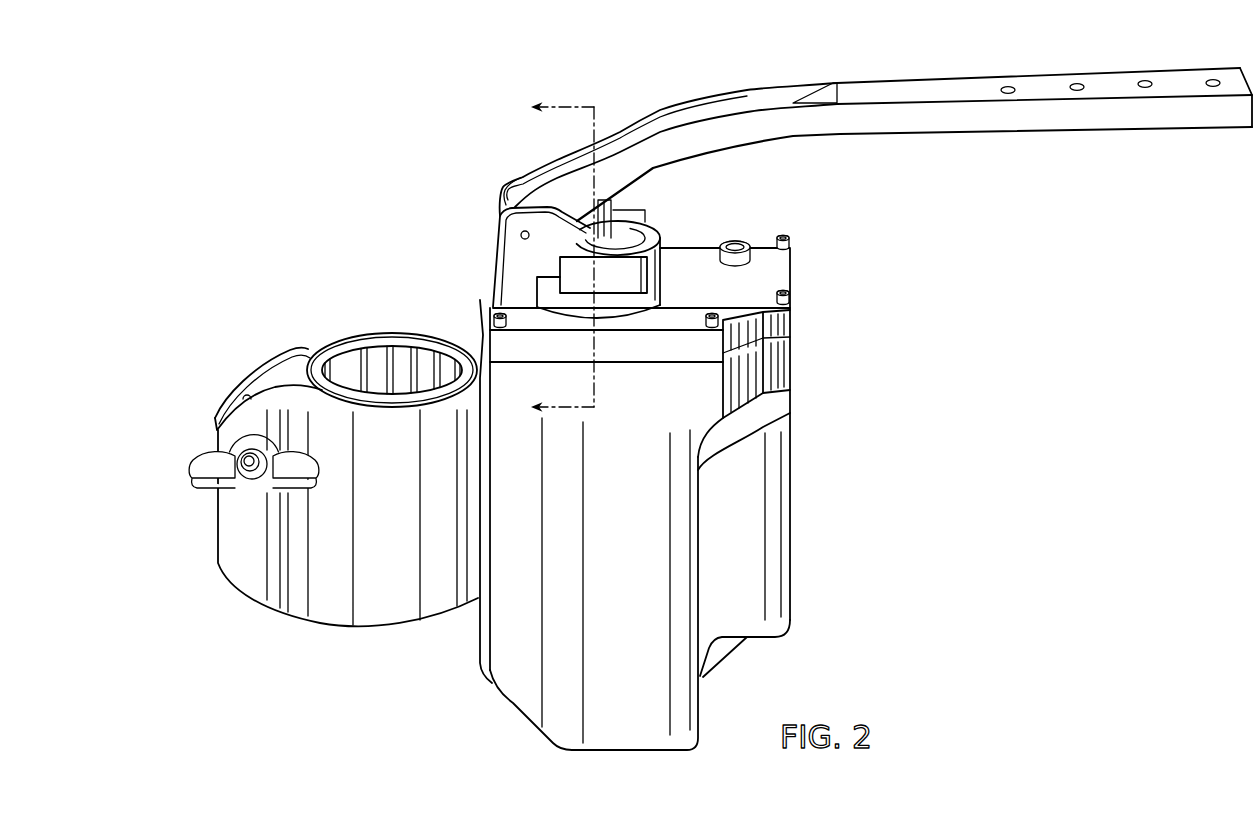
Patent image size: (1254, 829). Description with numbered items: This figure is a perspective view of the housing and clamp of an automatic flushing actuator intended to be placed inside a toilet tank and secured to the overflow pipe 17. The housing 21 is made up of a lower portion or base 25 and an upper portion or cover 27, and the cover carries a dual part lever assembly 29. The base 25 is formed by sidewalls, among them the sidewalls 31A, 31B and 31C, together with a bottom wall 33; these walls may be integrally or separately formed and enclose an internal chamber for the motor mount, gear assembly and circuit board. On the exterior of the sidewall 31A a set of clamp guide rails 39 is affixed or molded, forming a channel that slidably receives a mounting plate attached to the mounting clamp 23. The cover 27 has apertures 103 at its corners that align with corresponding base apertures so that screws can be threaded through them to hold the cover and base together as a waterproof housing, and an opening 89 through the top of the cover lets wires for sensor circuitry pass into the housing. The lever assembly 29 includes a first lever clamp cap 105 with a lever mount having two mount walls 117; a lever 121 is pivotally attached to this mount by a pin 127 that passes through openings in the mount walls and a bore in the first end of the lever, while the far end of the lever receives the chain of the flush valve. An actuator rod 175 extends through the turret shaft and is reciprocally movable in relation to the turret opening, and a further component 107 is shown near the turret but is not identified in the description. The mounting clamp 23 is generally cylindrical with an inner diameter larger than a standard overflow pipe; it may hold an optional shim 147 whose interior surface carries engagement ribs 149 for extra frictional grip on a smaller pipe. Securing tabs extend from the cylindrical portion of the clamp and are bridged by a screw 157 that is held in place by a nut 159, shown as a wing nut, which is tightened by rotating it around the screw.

The overflow pipe 17 is at (544, 256).
The housing 21 is at (852, 330).
The mounting clamp 23 is at (336, 610).
The base 25 is at (477, 690).
The cover 27 is at (804, 280).
The dual part lever assembly 29 is at (667, 216).
The sidewall 31A is at (477, 641).
The sidewall 31B is at (684, 712).
The sidewall 31C is at (754, 421).
The bottom wall 33 is at (557, 748).
The clamp guide rails 39 is at (479, 352).
The opening 89 is at (738, 243).
The apertures 103 is at (782, 241).
The first lever clamp cap 105 is at (505, 266).
The hub 107 is at (678, 248).
The mount walls 117 is at (510, 218).
The lever 121 is at (987, 137).
The pin 127 is at (519, 235).
The shim 147 is at (350, 368).
The engagement ribs 149 is at (375, 360).
The screw 157 is at (252, 473).
The nut 159 is at (205, 460).
The actuator rod 175 is at (608, 216).